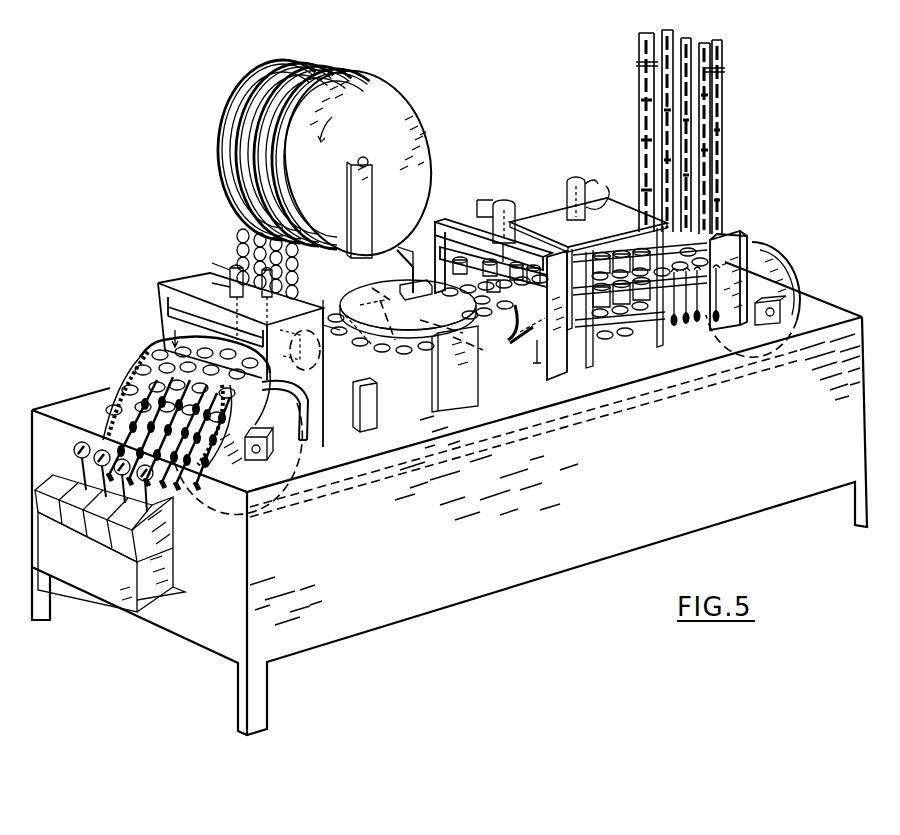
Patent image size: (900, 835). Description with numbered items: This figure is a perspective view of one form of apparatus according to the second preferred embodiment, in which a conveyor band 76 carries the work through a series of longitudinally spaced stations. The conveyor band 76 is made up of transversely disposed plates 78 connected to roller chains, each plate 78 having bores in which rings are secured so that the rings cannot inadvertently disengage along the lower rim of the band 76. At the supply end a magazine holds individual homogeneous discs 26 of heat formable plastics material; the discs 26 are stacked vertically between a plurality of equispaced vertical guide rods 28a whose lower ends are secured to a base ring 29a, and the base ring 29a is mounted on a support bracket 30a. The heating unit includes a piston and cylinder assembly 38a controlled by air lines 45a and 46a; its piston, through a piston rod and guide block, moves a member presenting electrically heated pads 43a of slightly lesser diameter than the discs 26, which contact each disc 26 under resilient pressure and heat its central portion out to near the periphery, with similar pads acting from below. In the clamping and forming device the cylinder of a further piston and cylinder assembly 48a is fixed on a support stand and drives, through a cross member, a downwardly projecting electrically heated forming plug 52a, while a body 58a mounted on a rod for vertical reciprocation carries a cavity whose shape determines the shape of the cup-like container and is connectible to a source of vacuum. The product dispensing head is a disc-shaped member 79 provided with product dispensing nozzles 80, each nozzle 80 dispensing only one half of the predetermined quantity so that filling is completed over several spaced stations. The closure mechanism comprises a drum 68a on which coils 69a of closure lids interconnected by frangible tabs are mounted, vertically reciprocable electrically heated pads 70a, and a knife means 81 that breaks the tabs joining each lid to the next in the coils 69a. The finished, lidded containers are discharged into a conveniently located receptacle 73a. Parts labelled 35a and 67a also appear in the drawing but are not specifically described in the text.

The discs 26 is at (640, 82).
The guide rods 28a is at (636, 64).
The base ring 29a is at (738, 233).
The support bracket 30a is at (752, 250).
The holders 35a is at (712, 320).
The piston and cylinder assembly 38a is at (570, 178).
The electrically heated pads 43a is at (637, 267).
The air line 45a is at (595, 178).
The air line 46a is at (590, 210).
The piston and cylinder assembly 48a is at (503, 202).
The forming plug 52a is at (458, 237).
The body 58a is at (550, 337).
The lever arm 67a is at (398, 258).
The drum 68a is at (402, 106).
The coils of closure lids 69a is at (248, 204).
The electrically heated pads 70a is at (160, 338).
The receptacle 73a is at (115, 538).
The conveyor band 76 is at (147, 355).
The plates 78 is at (260, 382).
The disc-shaped member 79 is at (425, 333).
The product dispensing nozzles 80 is at (395, 328).
The knife means 81 is at (310, 315).